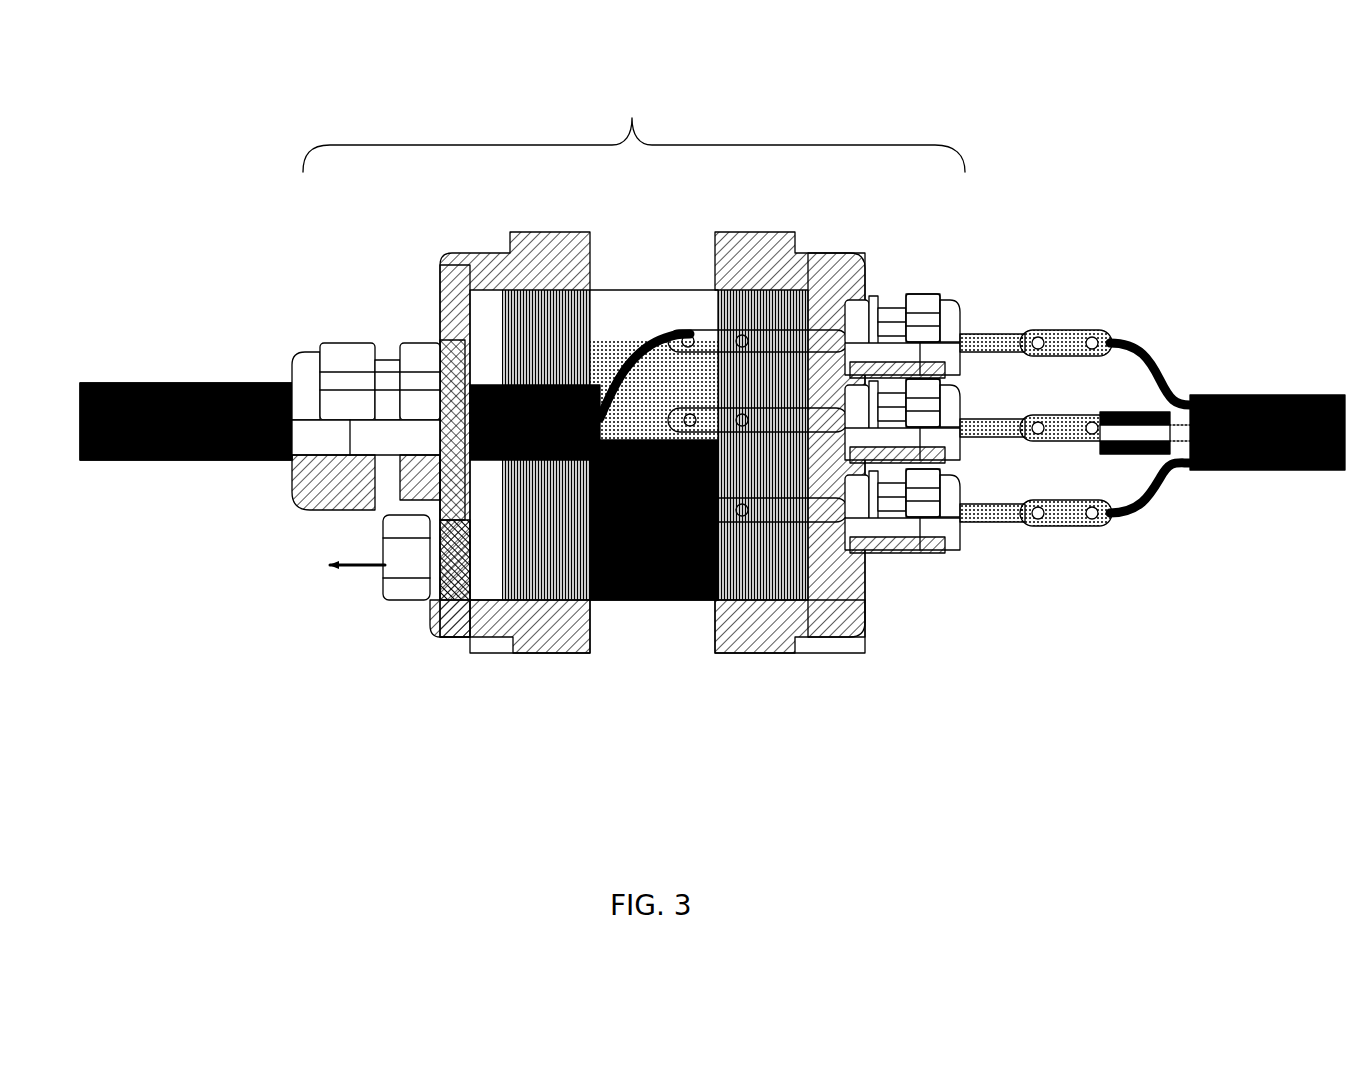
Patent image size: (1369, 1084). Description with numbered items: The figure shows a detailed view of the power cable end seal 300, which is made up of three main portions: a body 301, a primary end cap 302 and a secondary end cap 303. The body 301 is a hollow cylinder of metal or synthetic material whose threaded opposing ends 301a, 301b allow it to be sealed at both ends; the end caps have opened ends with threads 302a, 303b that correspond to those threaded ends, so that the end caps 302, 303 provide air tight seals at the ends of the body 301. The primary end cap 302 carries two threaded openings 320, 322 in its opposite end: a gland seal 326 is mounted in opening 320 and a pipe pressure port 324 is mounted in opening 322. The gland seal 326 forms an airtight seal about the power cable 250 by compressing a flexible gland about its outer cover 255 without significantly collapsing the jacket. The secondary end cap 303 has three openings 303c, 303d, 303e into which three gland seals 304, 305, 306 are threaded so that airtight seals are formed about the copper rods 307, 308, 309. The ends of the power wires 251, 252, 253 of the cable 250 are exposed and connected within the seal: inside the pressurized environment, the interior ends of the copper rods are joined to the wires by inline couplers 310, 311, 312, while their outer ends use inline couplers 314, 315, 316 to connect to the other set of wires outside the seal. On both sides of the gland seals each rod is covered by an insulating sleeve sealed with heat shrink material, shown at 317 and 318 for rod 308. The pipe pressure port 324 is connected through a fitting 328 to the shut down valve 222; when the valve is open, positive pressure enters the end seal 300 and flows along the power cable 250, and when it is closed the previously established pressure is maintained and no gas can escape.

The power cable end seal 300 is at (634, 118).
The power cable 250 is at (185, 488).
The power wire 251 is at (1135, 520).
The power wire 252 is at (1190, 397).
The power wire 253 is at (648, 340).
The outer cover 255 is at (140, 380).
The body 301 is at (620, 268).
The threaded end 301a is at (500, 628).
The threaded end 301b is at (830, 650).
The primary end cap 302 is at (545, 228).
The threads 302a is at (492, 252).
The secondary end cap 303 is at (760, 232).
The threads 303b is at (820, 255).
The opening 303c is at (880, 330).
The opening 303d is at (888, 525).
The opening 303e is at (874, 535).
The gland seal 304 is at (940, 295).
The gland seal 305 is at (935, 408).
The gland seal 306 is at (940, 563).
The copper rod 307 is at (988, 330).
The copper rod 308 is at (985, 450).
The copper rod 309 is at (995, 525).
The inline coupler 310 is at (705, 320).
The inline coupler 311 is at (645, 376).
The inline coupler 312 is at (676, 606).
The inline coupler 314 is at (1088, 330).
The inline coupler 315 is at (1105, 398).
The inline coupler 316 is at (1060, 530).
The insulating sleeve 317 is at (1025, 447).
The insulating sleeve 318 is at (1175, 458).
The threaded opening 320 is at (445, 352).
The threaded opening 322 is at (442, 600).
The pipe pressure port 324 is at (448, 630).
The gland seal 326 is at (340, 340).
The fitting 328 is at (383, 603).
The shut down valve 222 is at (323, 568).